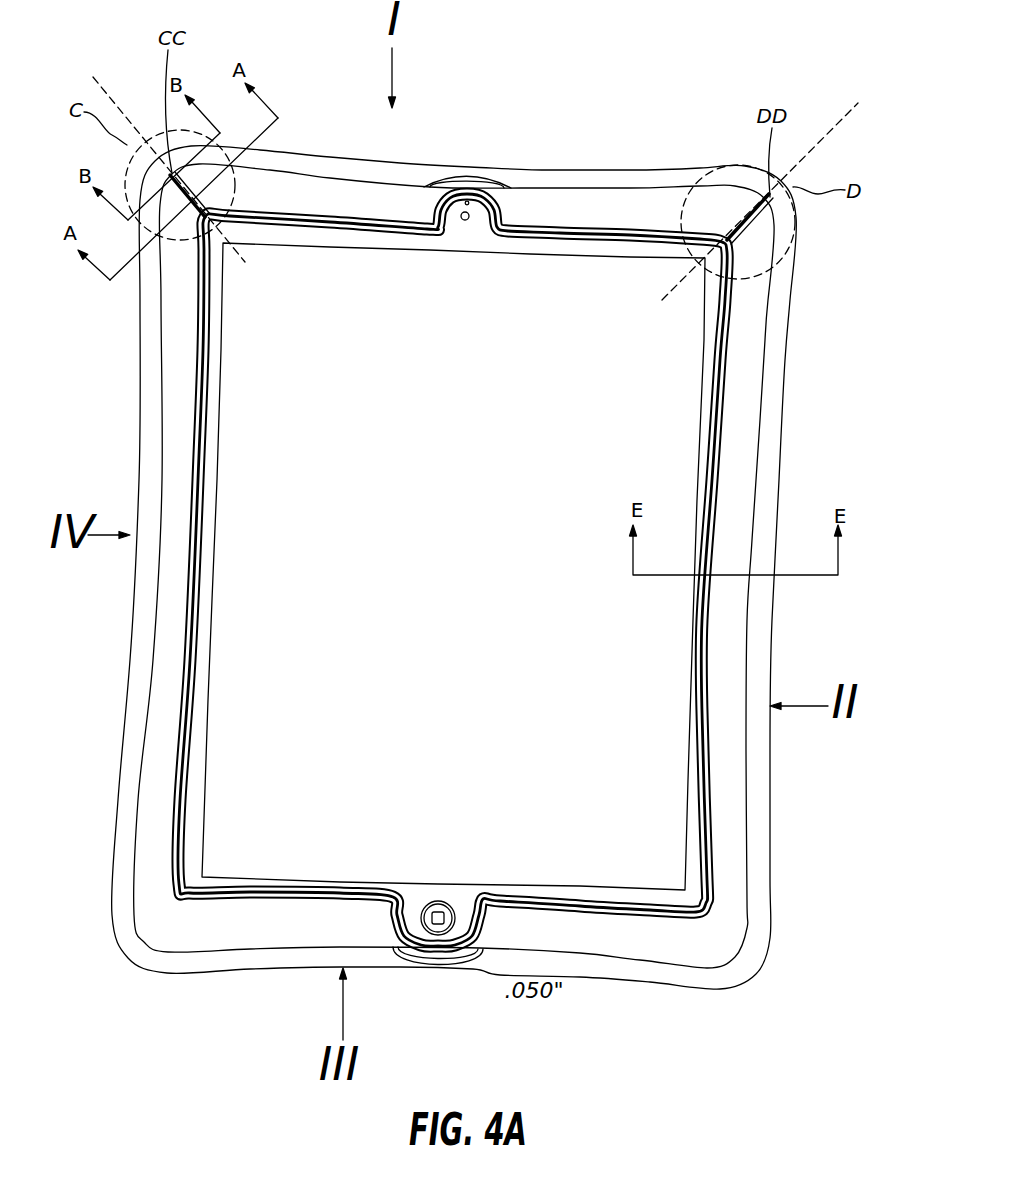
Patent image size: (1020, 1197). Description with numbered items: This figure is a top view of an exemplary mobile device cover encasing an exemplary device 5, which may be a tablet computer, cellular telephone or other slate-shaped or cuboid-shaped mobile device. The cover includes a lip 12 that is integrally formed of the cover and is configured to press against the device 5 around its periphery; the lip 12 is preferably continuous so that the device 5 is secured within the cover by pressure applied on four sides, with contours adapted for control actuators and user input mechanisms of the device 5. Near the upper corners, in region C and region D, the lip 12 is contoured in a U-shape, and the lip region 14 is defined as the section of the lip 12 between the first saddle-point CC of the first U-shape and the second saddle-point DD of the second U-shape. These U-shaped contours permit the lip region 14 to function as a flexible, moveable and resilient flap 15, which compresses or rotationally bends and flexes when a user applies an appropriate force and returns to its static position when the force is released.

The device 5 is at (490, 433).
The lip 12 is at (607, 242).
The lip region 14 is at (810, 139).
The flexible flap 15 is at (345, 214).